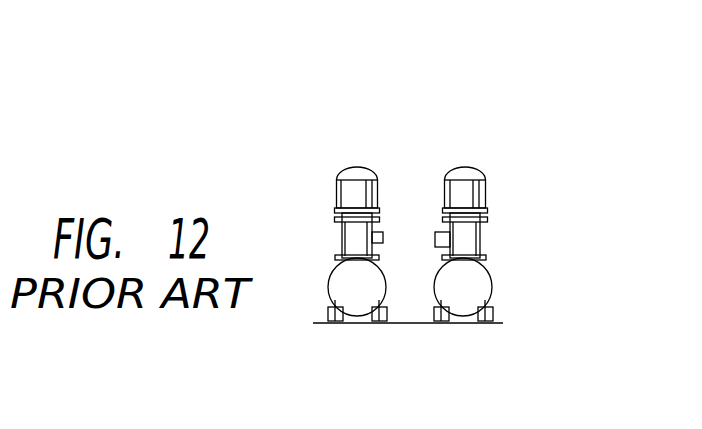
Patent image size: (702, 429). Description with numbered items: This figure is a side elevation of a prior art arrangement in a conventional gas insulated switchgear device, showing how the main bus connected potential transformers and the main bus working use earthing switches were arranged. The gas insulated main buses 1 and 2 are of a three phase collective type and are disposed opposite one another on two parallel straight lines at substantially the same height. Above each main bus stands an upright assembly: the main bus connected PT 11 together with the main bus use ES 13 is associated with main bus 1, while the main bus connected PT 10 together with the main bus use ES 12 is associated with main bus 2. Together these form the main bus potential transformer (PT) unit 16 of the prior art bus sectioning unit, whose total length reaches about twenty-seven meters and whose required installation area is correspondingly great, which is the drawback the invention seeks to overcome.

The gas insulated main bus 1 is at (340, 289).
The gas insulated main bus 2 is at (477, 292).
The main bus connected PT 10 is at (480, 193).
The main bus connected PT 11 is at (342, 196).
The main bus use ES 12 is at (435, 242).
The main bus use ES 13 is at (383, 230).
The main bus potential transformer (PT) unit 16 is at (462, 145).